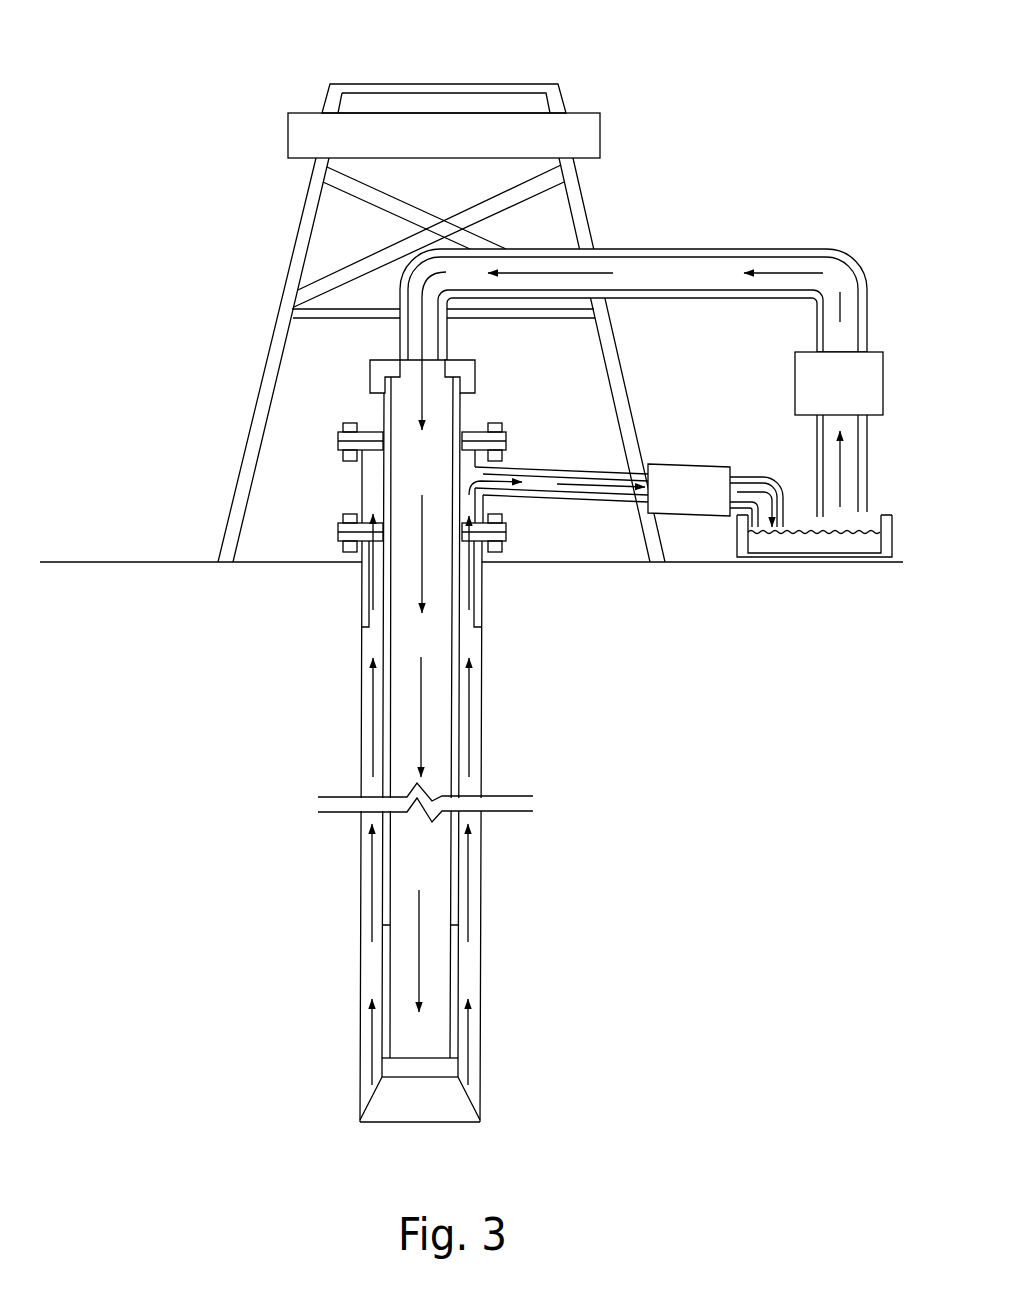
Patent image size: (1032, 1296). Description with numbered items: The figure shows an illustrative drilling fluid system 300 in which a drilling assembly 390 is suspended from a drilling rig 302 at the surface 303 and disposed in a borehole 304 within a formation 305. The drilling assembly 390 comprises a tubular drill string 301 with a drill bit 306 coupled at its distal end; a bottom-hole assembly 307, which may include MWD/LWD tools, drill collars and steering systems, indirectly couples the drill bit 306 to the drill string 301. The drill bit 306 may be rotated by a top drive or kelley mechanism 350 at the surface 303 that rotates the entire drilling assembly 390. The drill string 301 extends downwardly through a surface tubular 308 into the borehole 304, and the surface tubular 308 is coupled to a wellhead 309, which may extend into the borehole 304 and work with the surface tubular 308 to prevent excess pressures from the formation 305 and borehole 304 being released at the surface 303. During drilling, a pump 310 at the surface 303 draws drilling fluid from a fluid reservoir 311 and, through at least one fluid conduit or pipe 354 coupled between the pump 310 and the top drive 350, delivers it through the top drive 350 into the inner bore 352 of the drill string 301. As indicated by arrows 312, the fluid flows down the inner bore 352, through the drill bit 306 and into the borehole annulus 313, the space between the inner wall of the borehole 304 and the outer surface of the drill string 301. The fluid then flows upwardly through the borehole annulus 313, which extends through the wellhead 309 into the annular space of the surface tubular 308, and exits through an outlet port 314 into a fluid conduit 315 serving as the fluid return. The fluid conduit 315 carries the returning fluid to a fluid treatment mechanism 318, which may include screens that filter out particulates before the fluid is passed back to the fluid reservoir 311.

The drilling fluid system 300 is at (757, 71).
The drill string 301 is at (382, 705).
The drilling rig 302 is at (297, 230).
The surface 303 is at (155, 560).
The borehole 304 is at (482, 672).
The formation 305 is at (719, 628).
The drill bit 306 is at (468, 1097).
The bottom-hole assembly 307 is at (460, 980).
The surface tubular 308 is at (362, 487).
The wellhead 309 is at (362, 556).
The pump 310 is at (839, 383).
The fluid reservoir 311 is at (867, 523).
The arrows 312 is at (422, 405).
The borehole annulus 313 is at (380, 980).
The outlet port 314 is at (509, 463).
The fluid conduit 315 is at (507, 498).
The fluid treatment mechanism 318 is at (715, 495).
The top drive 350 is at (370, 372).
The inner bore 352 is at (422, 587).
The fluid conduit or pipe 354 is at (615, 247).
The drilling assembly 390 is at (475, 783).